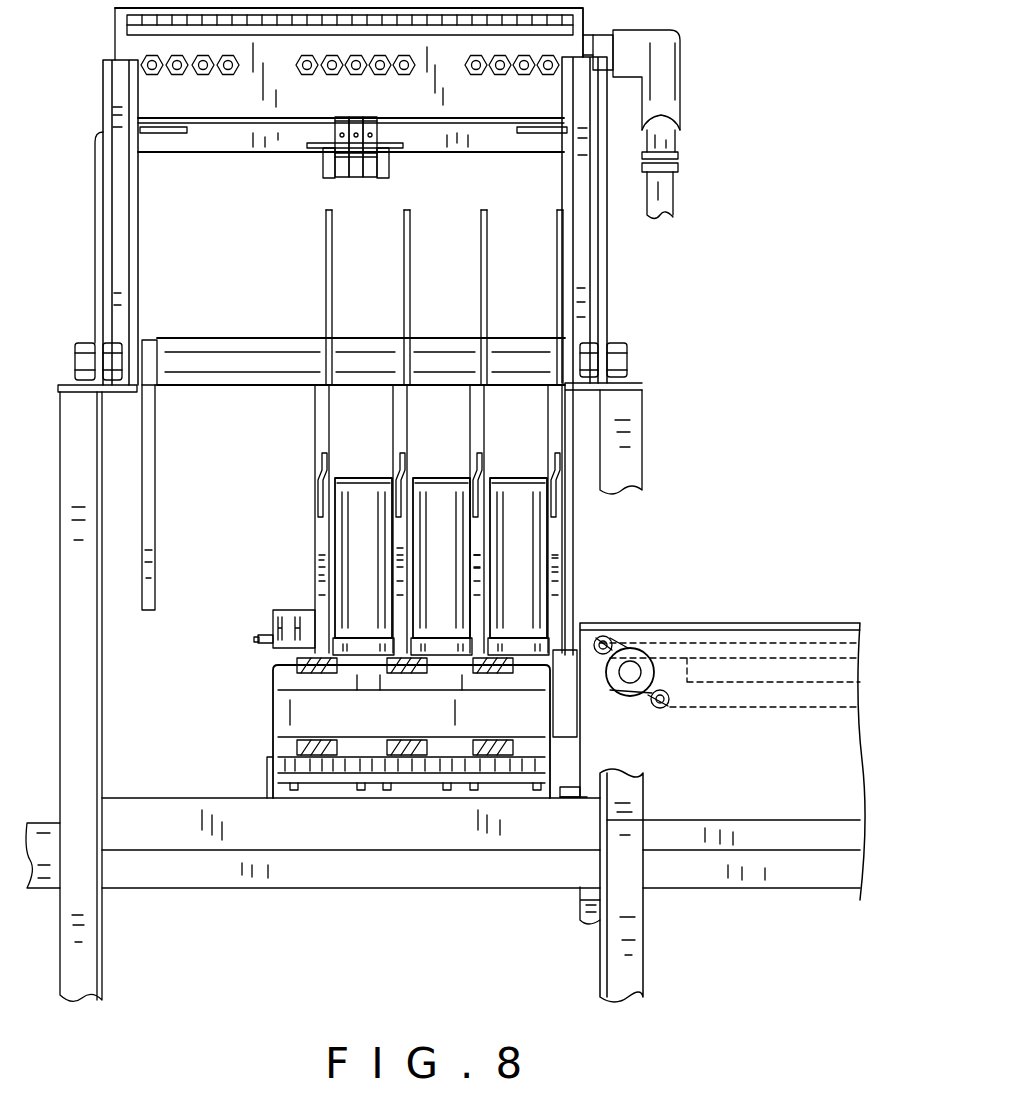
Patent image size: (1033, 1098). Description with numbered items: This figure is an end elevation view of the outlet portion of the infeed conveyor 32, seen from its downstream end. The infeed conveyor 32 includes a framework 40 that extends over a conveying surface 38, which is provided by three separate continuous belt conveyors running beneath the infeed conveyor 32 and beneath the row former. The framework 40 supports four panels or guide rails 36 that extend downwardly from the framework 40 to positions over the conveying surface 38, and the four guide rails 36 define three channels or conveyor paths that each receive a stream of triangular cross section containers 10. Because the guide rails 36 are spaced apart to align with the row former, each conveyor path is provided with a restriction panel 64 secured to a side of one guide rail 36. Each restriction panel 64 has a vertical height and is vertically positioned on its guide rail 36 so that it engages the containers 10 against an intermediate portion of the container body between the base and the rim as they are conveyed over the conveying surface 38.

The infeed conveyor 32 is at (667, 347).
The framework 40 is at (118, 292).
The containers 10 is at (368, 500).
The guide rails 36 is at (408, 597).
The restriction panel 64 is at (412, 553).
The conveying surface 38 is at (352, 648).